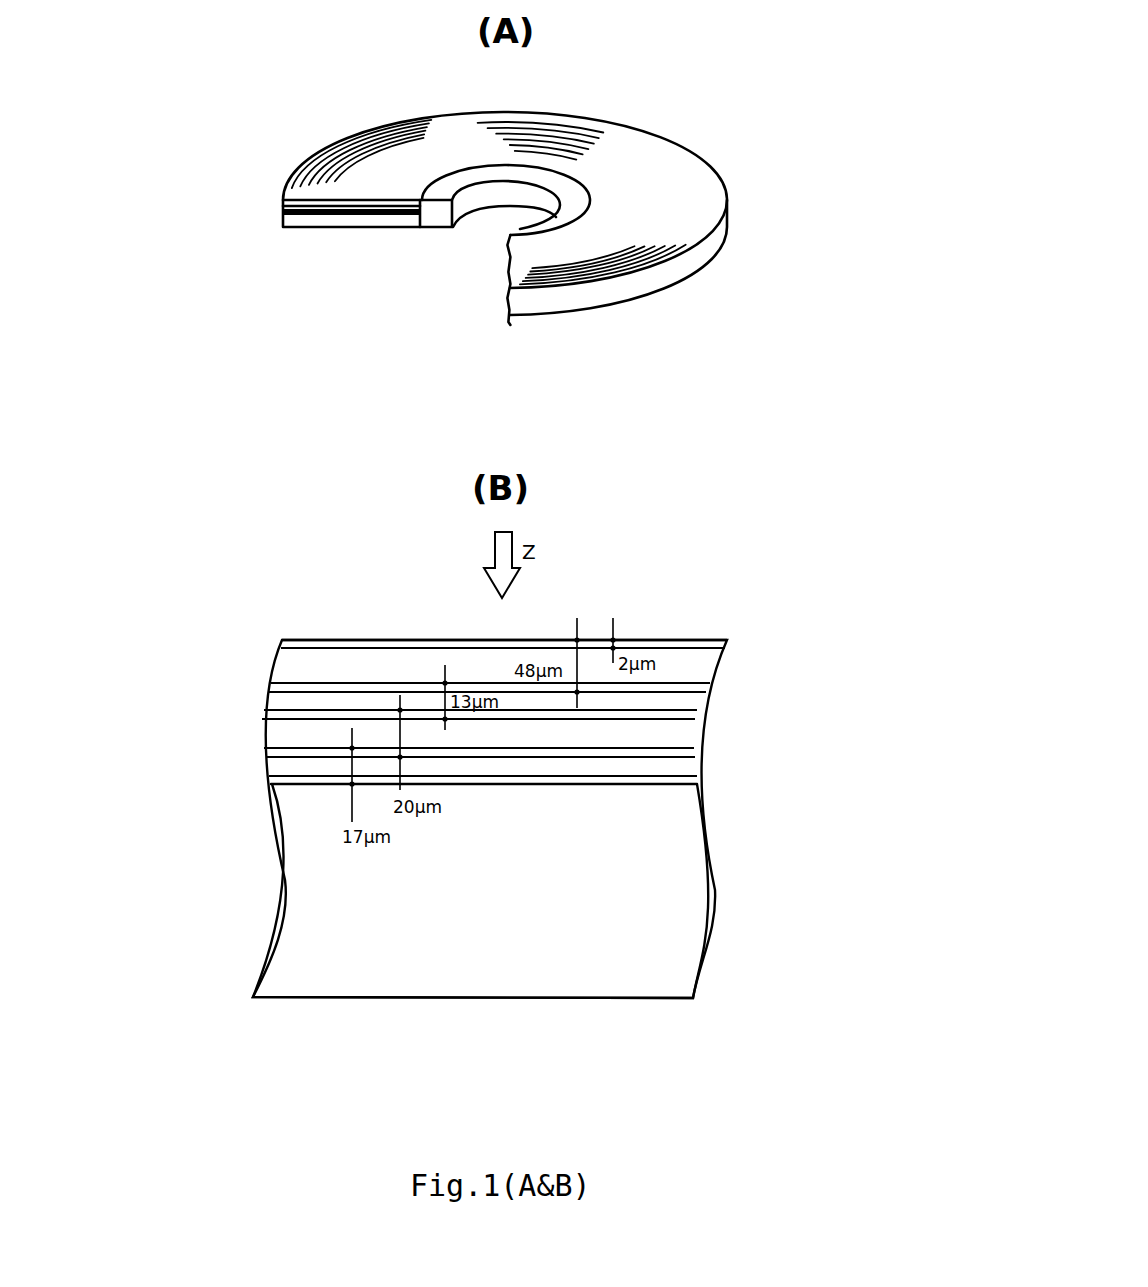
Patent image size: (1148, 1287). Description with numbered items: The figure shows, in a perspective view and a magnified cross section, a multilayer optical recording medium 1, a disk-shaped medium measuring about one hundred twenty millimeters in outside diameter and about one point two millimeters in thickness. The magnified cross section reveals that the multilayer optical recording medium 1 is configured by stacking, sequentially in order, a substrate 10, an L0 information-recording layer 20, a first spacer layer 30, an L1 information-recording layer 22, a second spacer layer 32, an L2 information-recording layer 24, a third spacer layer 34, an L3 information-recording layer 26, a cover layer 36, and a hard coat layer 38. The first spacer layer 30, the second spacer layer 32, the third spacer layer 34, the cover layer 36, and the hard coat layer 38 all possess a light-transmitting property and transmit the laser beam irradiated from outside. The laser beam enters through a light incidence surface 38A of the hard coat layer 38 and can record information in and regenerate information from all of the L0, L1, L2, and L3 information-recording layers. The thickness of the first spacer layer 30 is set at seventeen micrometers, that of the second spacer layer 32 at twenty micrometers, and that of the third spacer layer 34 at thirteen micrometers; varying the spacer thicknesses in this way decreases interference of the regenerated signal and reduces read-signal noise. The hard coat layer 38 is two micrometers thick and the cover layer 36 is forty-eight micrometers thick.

The multilayer optical recording medium 1 is at (678, 128).
The substrate 10 is at (703, 929).
The L0 information-recording layer 20 is at (698, 783).
The L1 information-recording layer 22 is at (696, 753).
The L2 information-recording layer 24 is at (698, 713).
The L3 information-recording layer 26 is at (703, 691).
The first spacer layer 30 is at (268, 766).
The second spacer layer 32 is at (270, 731).
The third spacer layer 34 is at (270, 700).
The cover layer 36 is at (282, 666).
The hard coat layer 38 is at (282, 645).
The light incidence surface 38A is at (318, 640).